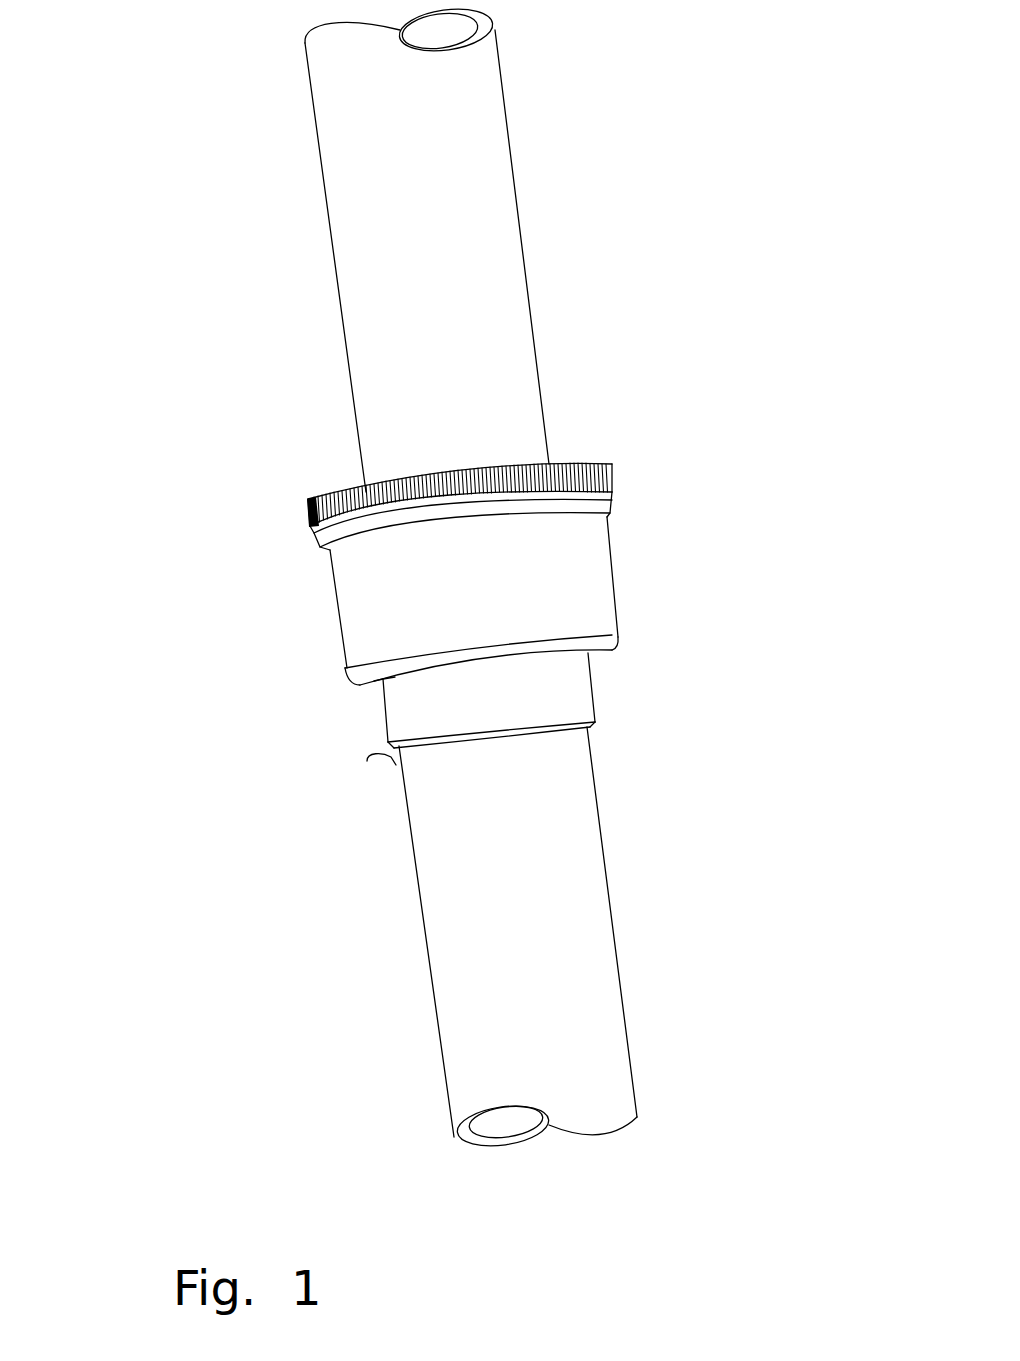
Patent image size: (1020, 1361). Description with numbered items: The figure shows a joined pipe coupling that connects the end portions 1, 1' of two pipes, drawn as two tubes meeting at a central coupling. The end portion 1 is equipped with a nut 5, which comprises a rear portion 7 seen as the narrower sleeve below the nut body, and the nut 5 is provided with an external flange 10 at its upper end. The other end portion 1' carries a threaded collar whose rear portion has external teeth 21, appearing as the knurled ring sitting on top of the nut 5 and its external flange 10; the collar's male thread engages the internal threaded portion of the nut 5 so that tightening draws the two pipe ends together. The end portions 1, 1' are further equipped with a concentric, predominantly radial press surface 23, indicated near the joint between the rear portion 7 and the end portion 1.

The end portion of pipe 1' is at (313, 248).
The external teeth 21 is at (335, 495).
The external flange 10 is at (612, 503).
The nut 5 is at (365, 580).
The rear portion 7 is at (615, 647).
The end portion of pipe 1 is at (392, 957).
The press surface 23 is at (367, 761).